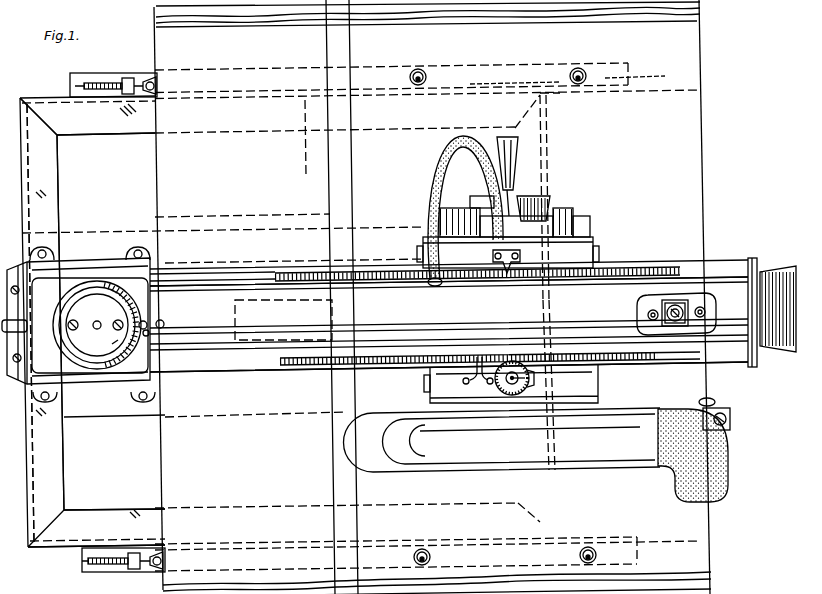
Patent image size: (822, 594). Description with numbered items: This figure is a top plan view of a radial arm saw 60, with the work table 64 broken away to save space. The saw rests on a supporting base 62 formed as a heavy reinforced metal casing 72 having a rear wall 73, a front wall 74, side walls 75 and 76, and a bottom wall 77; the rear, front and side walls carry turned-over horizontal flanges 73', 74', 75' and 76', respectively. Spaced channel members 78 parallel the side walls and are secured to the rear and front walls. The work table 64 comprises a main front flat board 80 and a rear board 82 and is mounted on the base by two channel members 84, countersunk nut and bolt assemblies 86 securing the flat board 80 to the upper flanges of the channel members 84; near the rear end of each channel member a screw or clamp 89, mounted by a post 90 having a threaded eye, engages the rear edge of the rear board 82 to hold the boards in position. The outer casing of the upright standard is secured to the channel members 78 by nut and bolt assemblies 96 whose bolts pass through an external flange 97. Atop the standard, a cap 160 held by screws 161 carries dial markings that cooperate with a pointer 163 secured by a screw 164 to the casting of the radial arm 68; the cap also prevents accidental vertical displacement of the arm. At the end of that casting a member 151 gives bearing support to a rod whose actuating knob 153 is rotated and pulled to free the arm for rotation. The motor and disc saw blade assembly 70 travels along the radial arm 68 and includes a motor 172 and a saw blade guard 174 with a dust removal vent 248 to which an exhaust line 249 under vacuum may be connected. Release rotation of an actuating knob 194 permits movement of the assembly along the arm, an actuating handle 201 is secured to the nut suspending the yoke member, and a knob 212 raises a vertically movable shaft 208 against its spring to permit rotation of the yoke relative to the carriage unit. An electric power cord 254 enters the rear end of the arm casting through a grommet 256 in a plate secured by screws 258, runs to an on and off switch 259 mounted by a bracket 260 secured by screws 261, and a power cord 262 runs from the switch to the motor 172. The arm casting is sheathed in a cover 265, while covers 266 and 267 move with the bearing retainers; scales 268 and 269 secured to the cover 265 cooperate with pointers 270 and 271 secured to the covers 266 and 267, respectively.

The radial arm saw 60 is at (730, 101).
The supporting base 62 is at (40, 89).
The work table 64 is at (716, 164).
The radial arm 68 is at (726, 258).
The motor and disc saw blade assembly 70 is at (586, 206).
The metal casing 72 is at (87, 512).
The rear wall 73 is at (62, 323).
The horizontal flange 73' is at (77, 322).
The front wall 74 is at (557, 196).
The horizontal flange 74' is at (355, 411).
The side wall 75 is at (50, 131).
The horizontal flange 75' is at (106, 145).
The side wall 76 is at (427, 530).
The horizontal flange 76' is at (114, 496).
The bottom wall 77 is at (136, 178).
The channel members 78 is at (115, 232).
The main front flat board 80 is at (697, 24).
The rear board 82 is at (171, 38).
The channel members 84 is at (84, 76).
The countersunk nut and bolt assemblies 86 is at (417, 69).
The screw or clamp 89 is at (100, 81).
The post 90 is at (129, 76).
The nut and bolt assemblies 96 is at (50, 255).
The external flange 97 is at (137, 254).
The member 151 is at (753, 262).
The actuating knob 153 is at (783, 278).
The cap 160 is at (78, 282).
The screws 161 is at (115, 342).
The pointer 163 is at (148, 314).
The screw 164 is at (147, 334).
The motor 172 is at (561, 238).
The saw blade guard 174 is at (413, 460).
The actuating knob 194 is at (527, 194).
The actuating handle 201 is at (519, 153).
The vertically movable shaft 208 is at (511, 387).
The knob 212 is at (530, 388).
The dust removal vent 248 is at (625, 440).
The exhaust line 249 is at (730, 478).
The electric power cord 254 is at (114, 328).
The grommet 256 is at (70, 323).
The screws 258 is at (27, 324).
The on and off switch 259 is at (687, 330).
The bracket 260 is at (708, 295).
The screws 261 is at (648, 311).
The power cord 262 is at (428, 158).
The cover 265 is at (252, 288).
The cover 266 is at (585, 219).
The cover 267 is at (572, 386).
The scale 268 is at (663, 270).
The scale 269 is at (640, 358).
The pointer 270 is at (507, 252).
The pointer 271 is at (479, 386).